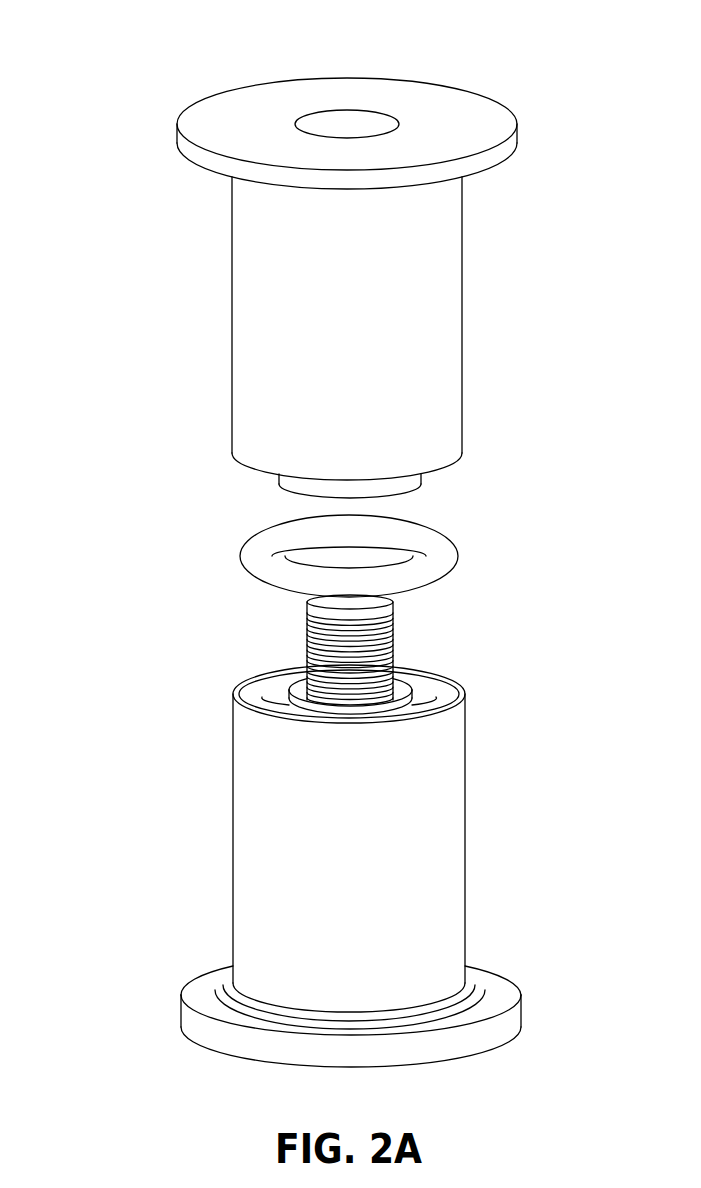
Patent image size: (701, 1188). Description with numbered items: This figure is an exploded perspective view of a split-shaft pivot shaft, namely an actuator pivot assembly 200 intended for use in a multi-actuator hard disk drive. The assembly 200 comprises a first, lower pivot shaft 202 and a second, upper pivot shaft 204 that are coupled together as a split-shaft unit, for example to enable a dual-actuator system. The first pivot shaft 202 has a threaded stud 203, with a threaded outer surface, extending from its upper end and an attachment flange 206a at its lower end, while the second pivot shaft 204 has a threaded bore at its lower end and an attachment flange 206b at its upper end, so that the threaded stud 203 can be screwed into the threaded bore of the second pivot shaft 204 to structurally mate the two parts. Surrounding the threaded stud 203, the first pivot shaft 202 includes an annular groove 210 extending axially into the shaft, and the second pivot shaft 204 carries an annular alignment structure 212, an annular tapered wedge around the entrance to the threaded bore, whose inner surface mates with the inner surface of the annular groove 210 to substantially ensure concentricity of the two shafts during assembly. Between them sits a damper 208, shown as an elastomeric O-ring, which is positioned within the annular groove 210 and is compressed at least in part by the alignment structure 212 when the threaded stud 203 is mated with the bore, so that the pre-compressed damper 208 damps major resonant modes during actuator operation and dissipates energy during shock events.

The actuator pivot assembly 200 is at (148, 72).
The first pivot shaft 202 is at (432, 862).
The threaded stud 203 is at (383, 651).
The second pivot shaft 204 is at (428, 316).
The attachment flange 206a is at (505, 992).
The attachment flange 206b is at (485, 124).
The damper 208 is at (422, 537).
The annular groove 210 is at (265, 693).
The alignment structure 212 is at (297, 483).